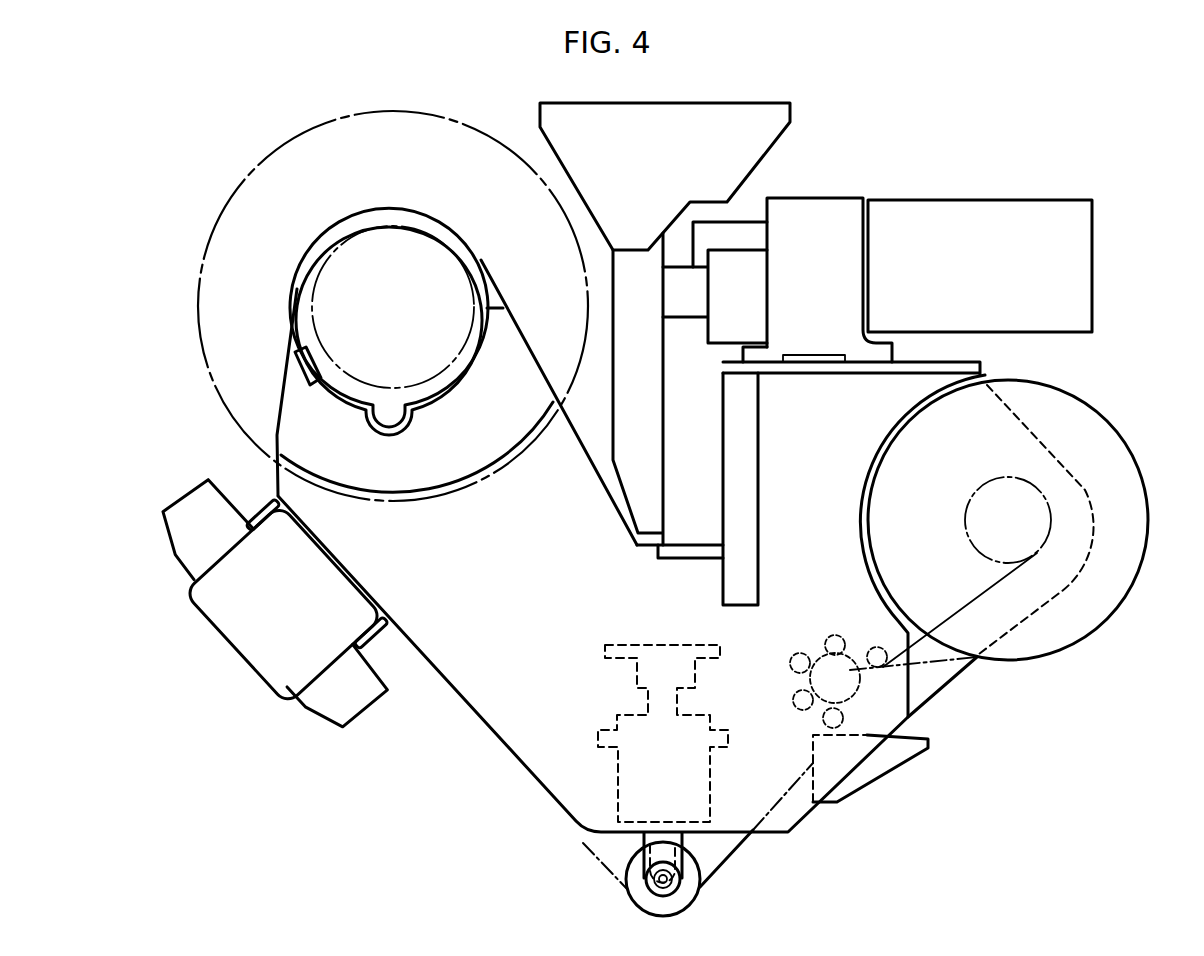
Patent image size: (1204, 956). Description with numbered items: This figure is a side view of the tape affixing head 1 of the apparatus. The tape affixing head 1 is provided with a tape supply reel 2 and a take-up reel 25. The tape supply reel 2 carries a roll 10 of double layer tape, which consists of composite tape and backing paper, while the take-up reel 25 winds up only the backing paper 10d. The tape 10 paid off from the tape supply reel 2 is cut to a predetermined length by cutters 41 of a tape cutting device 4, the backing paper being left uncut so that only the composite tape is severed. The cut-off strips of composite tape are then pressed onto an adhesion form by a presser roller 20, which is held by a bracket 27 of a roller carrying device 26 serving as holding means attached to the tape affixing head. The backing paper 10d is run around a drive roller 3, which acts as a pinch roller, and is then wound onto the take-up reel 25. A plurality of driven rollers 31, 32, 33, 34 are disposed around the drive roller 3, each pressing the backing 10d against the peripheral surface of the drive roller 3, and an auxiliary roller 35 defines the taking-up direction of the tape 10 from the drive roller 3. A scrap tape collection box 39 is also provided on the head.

The tape affixing head 1 is at (500, 734).
The tape supply reel 2 is at (205, 293).
The drive roller (pinch roller) 3 is at (861, 691).
The tape cutting device 4 is at (207, 636).
The roll of double layer tape 10 is at (585, 859).
The backing paper 10d is at (740, 866).
The presser roller 20 is at (637, 882).
The take-up reel 25 is at (1106, 412).
The roller carrying device (holding means) 26 is at (612, 772).
The bracket 27 is at (710, 887).
The driven roller 31 is at (818, 725).
The driven roller 32 is at (785, 697).
The driven roller 33 is at (802, 648).
The driven roller 34 is at (838, 632).
The auxiliary roller 35 is at (882, 640).
The scrap tape collection box 39 is at (929, 752).
The cutters 41 is at (266, 496).